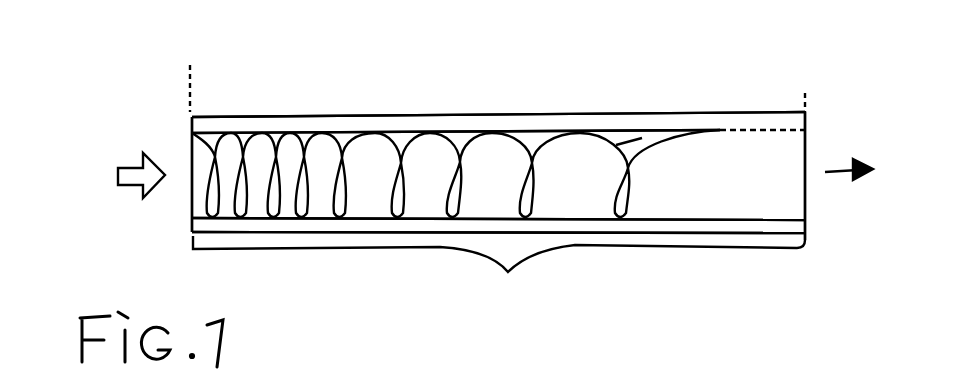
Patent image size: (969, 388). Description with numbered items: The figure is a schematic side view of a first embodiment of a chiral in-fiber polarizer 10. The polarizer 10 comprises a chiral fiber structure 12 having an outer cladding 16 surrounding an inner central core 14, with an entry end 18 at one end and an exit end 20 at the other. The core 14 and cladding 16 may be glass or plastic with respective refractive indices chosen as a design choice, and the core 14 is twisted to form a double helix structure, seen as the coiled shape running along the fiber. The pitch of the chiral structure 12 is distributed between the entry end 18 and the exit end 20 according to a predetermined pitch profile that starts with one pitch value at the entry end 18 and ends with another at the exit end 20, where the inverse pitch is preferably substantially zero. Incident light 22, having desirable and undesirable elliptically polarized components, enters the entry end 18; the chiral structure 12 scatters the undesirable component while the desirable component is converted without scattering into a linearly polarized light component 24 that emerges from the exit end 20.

The chiral in-fiber polarizer 10 is at (520, 67).
The chiral fiber structure 12 is at (245, 118).
The inner central core 14 is at (747, 192).
The outer cladding 16 is at (657, 123).
The entry end 18 is at (190, 197).
The exit end 20 is at (807, 196).
The incident light 22 is at (122, 155).
The desirable linearly polarized light component 24 is at (842, 170).